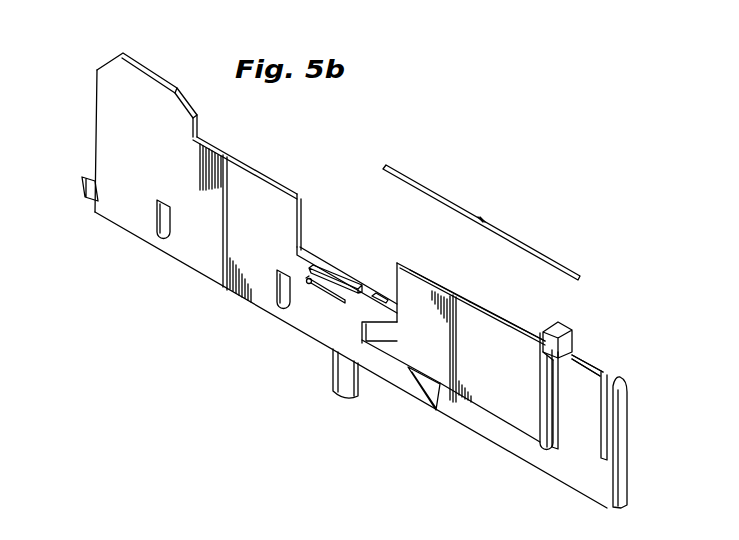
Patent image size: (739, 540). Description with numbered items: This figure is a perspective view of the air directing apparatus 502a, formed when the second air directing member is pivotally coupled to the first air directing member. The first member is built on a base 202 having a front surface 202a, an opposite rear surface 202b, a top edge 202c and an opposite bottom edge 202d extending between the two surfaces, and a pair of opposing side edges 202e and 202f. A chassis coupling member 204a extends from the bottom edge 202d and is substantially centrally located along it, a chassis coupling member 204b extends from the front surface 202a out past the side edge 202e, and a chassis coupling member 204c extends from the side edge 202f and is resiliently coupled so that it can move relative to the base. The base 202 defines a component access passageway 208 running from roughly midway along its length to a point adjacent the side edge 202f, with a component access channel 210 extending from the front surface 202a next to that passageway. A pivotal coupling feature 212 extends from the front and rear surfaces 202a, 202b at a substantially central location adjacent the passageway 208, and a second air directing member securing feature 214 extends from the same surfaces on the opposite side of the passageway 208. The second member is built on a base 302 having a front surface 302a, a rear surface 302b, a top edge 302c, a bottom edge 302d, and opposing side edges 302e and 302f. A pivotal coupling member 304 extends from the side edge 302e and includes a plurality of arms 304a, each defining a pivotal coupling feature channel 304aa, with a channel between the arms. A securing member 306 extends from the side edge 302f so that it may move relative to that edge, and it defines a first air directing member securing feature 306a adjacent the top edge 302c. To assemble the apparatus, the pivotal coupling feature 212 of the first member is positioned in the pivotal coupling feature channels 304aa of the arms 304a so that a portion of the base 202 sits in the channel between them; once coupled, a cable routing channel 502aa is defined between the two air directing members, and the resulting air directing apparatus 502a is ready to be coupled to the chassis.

The base 202 is at (108, 60).
The front surface 202a is at (129, 220).
The rear surface 202b is at (286, 182).
The top edge 202c is at (243, 162).
The bottom edge 202d is at (215, 280).
The side edge 202e is at (96, 132).
The side edge 202f is at (613, 380).
The chassis coupling member 204a is at (340, 396).
The chassis coupling member 204b is at (88, 190).
The chassis coupling member 204c is at (628, 392).
The component access passageway 208 is at (500, 205).
The component access channel 210 is at (414, 394).
The pivotal coupling feature 212 is at (308, 276).
The second air directing member securing feature 214 is at (575, 356).
The base 302 is at (503, 428).
The front surface 302a is at (487, 410).
The rear surface 302b is at (490, 313).
The top edge 302c is at (447, 290).
The bottom edge 302d is at (527, 436).
The side edge 302e is at (396, 278).
The side edge 302f is at (548, 384).
The pivotal coupling member 304 is at (322, 310).
The arms 304a is at (325, 268).
The pivotal coupling feature channel 304aa is at (310, 288).
The securing member 306 is at (578, 321).
The first air directing member securing feature 306a is at (550, 358).
The air directing apparatus 502a is at (438, 156).
The cable routing channel 502aa is at (364, 346).